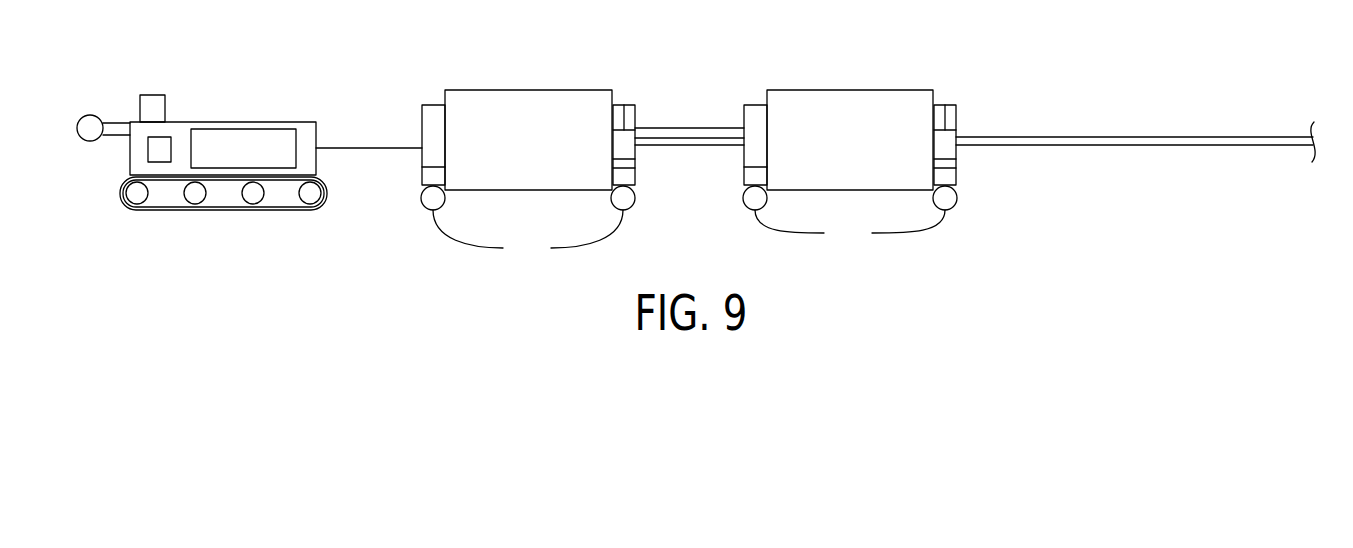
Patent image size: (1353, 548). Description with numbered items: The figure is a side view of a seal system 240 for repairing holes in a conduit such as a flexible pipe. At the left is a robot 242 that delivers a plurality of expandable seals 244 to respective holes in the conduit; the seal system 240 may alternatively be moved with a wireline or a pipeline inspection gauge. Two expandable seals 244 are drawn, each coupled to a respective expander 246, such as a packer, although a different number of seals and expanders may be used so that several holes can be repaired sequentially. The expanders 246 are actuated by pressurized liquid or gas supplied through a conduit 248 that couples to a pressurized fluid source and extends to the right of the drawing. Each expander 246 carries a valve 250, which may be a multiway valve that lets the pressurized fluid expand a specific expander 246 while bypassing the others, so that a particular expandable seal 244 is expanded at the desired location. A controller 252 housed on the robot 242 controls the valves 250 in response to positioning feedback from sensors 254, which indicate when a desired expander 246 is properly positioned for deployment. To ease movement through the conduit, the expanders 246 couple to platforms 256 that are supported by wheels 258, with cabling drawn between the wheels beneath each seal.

The seal system 240 is at (910, 36).
The robot 242 is at (214, 97).
The expandable seal 244 is at (520, 110).
The expander 246 is at (432, 133).
The conduit 248 is at (1135, 137).
The valve 250 is at (623, 108).
The controller 252 is at (243, 127).
The sensor 254 is at (101, 117).
The platform 256 is at (617, 175).
The wheel 258 is at (689, 225).